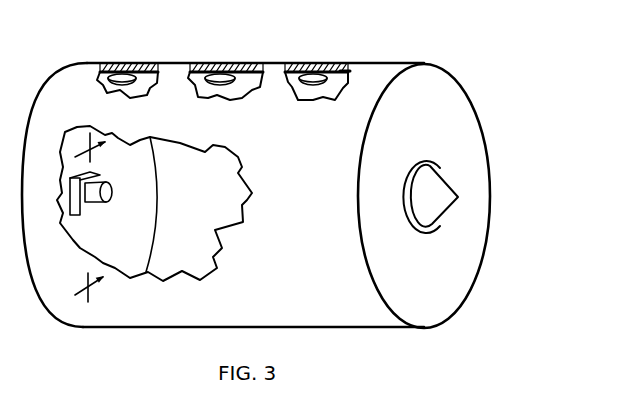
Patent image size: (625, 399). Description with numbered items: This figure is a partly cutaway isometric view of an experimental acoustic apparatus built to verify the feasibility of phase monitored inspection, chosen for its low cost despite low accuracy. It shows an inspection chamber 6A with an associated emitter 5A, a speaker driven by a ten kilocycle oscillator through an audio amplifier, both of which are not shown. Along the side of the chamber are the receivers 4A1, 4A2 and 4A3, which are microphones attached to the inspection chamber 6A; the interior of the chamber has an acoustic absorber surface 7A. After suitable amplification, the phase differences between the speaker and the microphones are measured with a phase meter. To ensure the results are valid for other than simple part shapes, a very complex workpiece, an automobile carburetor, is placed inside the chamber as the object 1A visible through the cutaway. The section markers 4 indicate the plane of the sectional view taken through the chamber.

The object 1A is at (95, 175).
The section line 4- 4 is at (86, 217).
The receiver 4A1 is at (122, 64).
The receiver 4A2 is at (221, 64).
The receiver 4A3 is at (318, 64).
The emitter 5A is at (433, 215).
The inspection chamber 6A is at (458, 112).
The acoustic absorber surface 7A is at (337, 73).